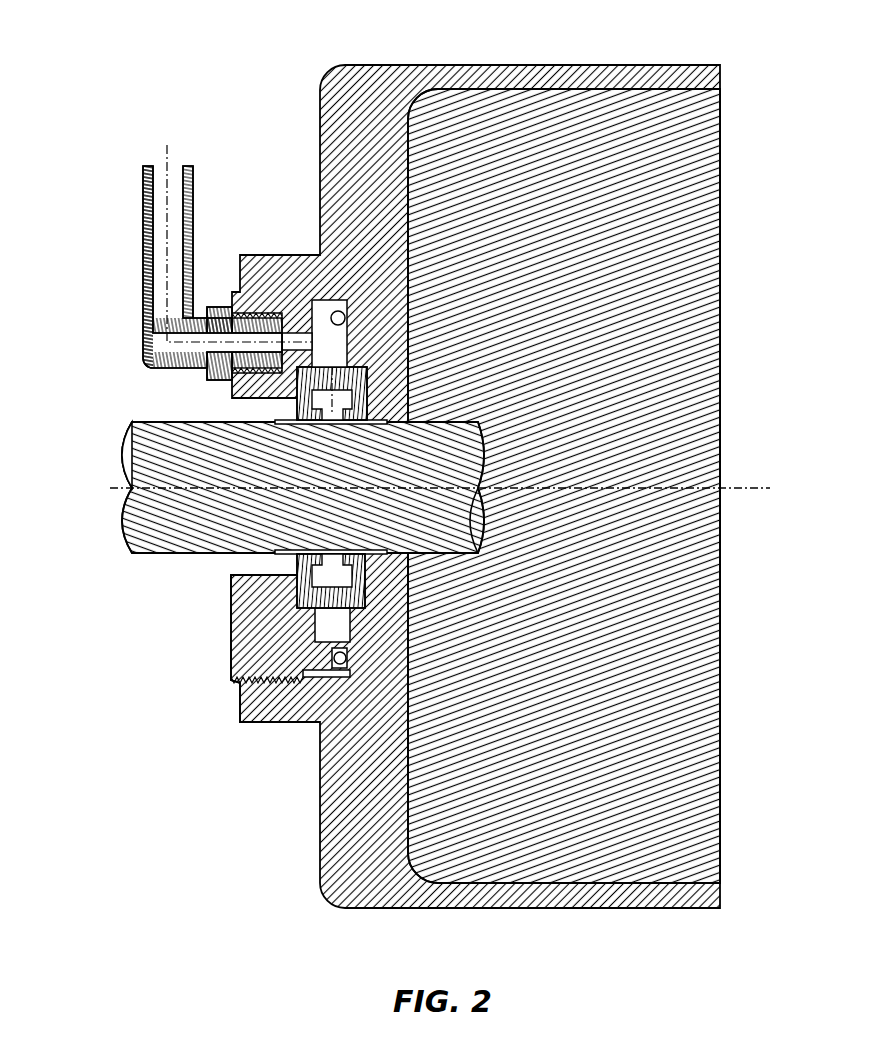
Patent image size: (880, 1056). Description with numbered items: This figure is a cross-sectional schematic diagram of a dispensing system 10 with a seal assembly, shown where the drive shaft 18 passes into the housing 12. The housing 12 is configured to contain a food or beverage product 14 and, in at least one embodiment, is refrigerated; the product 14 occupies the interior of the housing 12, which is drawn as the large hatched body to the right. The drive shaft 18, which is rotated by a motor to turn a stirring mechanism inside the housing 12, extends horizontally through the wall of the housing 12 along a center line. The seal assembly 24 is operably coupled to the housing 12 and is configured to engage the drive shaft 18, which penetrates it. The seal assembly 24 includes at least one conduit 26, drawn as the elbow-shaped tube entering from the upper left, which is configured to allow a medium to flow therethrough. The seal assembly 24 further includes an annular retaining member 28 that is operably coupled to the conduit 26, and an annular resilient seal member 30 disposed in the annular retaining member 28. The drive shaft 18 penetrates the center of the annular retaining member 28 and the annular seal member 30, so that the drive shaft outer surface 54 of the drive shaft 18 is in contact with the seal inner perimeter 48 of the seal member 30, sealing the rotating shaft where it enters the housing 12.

The dispensing system 10 is at (790, 108).
The housing 12 is at (372, 83).
The food or beverage product 14 is at (538, 110).
The drive shaft 18 is at (108, 518).
The seal assembly 24 is at (179, 262).
The conduit 26 is at (193, 208).
The annular retaining member 28 is at (232, 660).
The annular resilient seal member 30 is at (297, 412).
The seal inner perimeter 48 is at (290, 553).
The drive shaft outer surface 54 is at (148, 556).